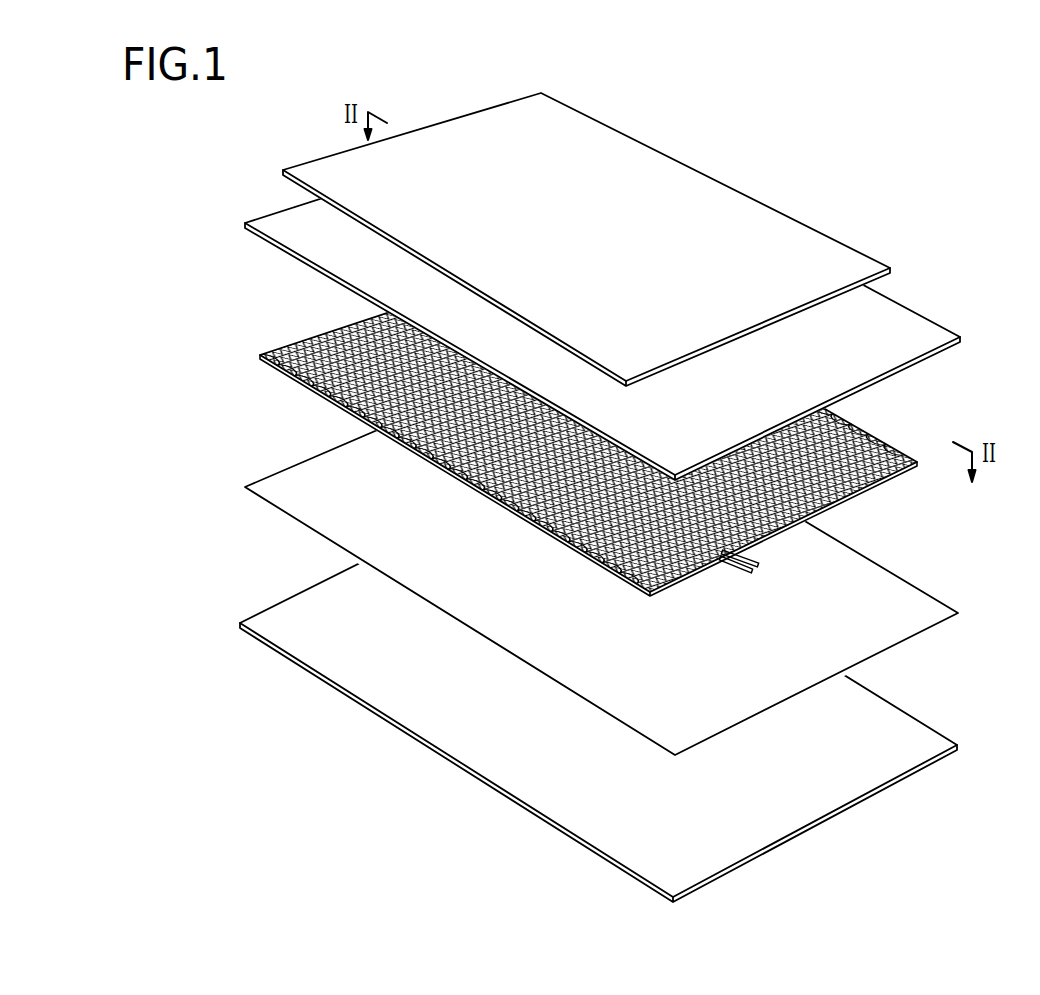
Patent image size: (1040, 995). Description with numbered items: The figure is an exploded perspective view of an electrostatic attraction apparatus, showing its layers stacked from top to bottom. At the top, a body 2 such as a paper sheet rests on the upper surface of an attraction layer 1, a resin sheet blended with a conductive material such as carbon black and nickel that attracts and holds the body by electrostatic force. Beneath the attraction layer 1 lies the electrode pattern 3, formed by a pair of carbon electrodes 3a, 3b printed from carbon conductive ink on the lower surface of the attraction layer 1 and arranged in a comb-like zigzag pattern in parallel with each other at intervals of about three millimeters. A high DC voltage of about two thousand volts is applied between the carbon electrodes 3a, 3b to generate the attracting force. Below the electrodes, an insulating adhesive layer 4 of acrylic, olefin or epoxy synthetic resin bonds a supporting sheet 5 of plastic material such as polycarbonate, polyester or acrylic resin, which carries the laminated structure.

The attraction layer 1 is at (917, 328).
The body 2 is at (823, 248).
The heating element 3 is at (618, 424).
The carbon electrode 3a is at (758, 562).
The carbon electrode 3b is at (750, 571).
The insulating adhesive layer 4 is at (920, 605).
The supporting sheet 5 is at (888, 758).